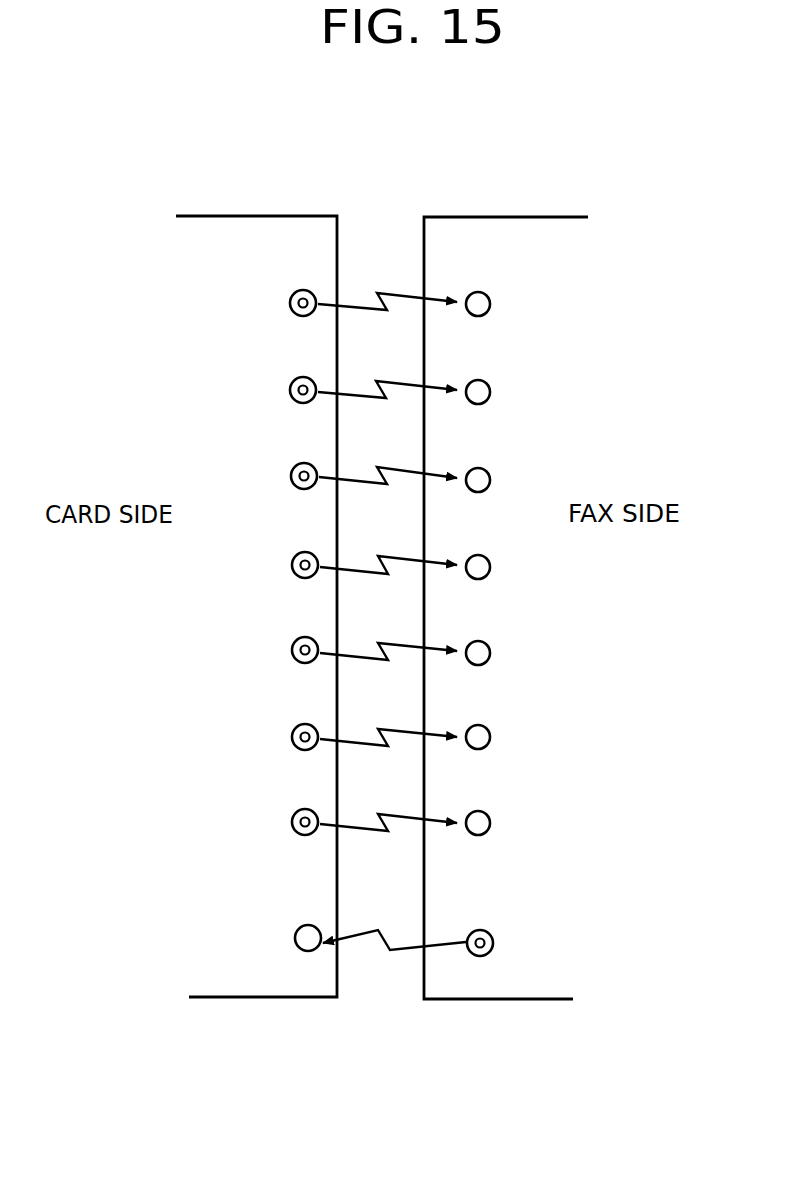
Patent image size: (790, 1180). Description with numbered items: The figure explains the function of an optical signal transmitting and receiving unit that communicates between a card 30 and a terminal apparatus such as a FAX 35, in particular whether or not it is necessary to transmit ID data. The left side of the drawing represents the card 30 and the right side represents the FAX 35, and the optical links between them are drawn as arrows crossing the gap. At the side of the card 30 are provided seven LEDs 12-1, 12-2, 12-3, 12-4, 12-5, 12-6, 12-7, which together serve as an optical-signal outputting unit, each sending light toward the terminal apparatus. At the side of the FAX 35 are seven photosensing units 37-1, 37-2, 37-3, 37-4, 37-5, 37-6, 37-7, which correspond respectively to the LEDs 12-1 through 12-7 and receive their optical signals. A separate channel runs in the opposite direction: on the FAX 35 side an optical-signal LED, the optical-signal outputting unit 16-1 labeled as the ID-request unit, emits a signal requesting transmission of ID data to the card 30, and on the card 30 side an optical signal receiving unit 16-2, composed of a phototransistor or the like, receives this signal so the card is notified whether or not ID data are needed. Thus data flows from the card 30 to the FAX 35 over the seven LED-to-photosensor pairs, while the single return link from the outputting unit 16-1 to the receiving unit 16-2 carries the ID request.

The card 30 is at (250, 215).
The FAX 35 is at (517, 216).
The LED 12-1 is at (292, 294).
The LED 12-2 is at (297, 380).
The LED 12-3 is at (297, 463).
The LED 12-4 is at (298, 577).
The LED 12-5 is at (298, 661).
The LED 12-6 is at (298, 748).
The LED 12-7 is at (298, 834).
The photosensing unit 37-1 is at (490, 302).
The photosensing unit 37-2 is at (490, 390).
The photosensing unit 37-3 is at (489, 472).
The photosensing unit 37-4 is at (490, 570).
The photosensing unit 37-5 is at (490, 656).
The photosensing unit 37-6 is at (490, 739).
The photosensing unit 37-7 is at (490, 823).
The optical-signal outputting unit (RID LED) 16-1 is at (561, 930).
The optical-signal receiving unit 16-2 is at (294, 936).